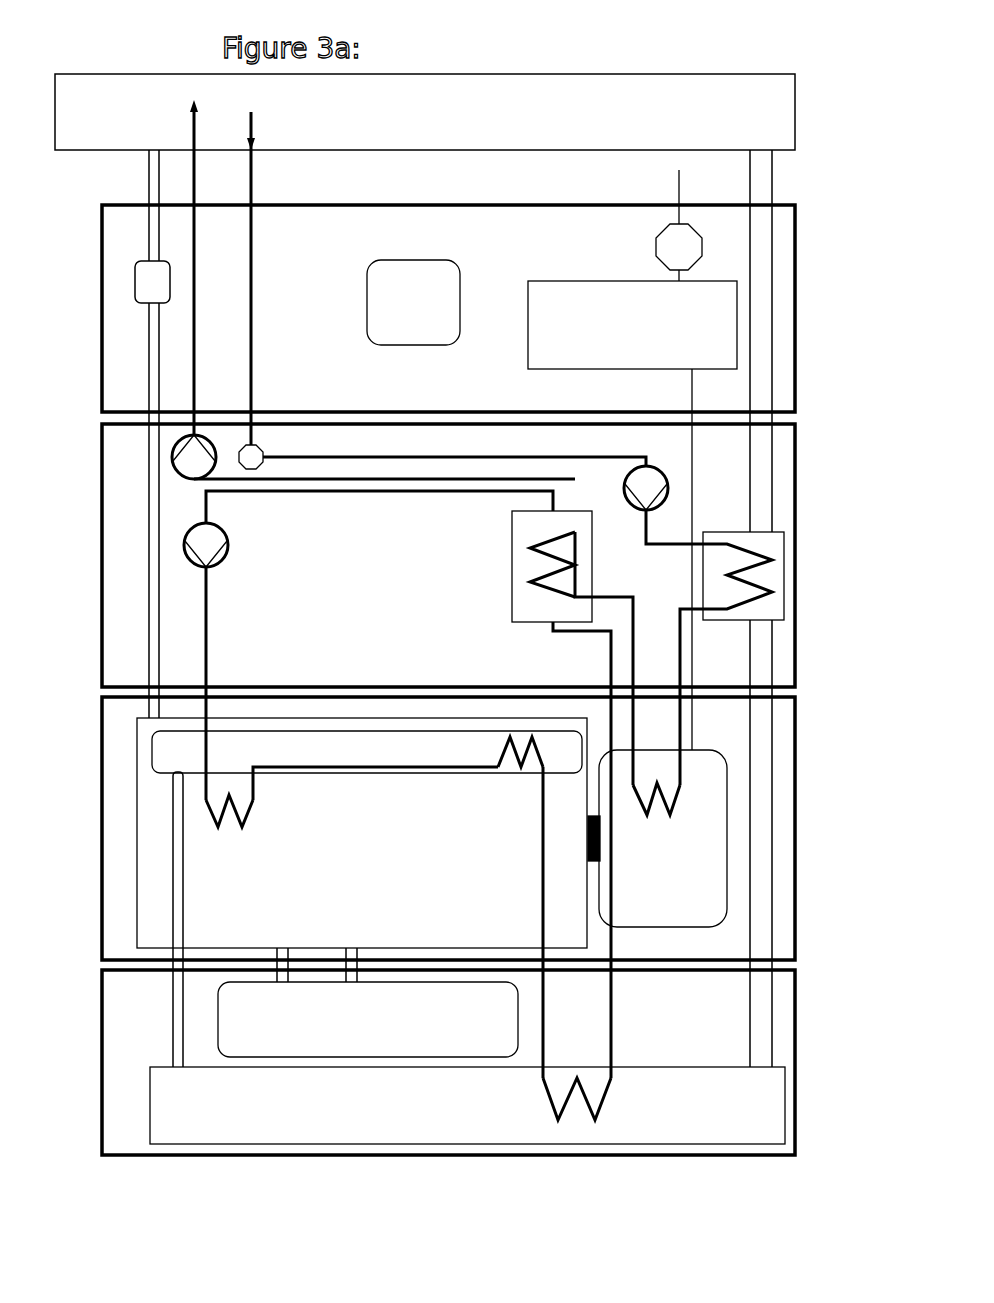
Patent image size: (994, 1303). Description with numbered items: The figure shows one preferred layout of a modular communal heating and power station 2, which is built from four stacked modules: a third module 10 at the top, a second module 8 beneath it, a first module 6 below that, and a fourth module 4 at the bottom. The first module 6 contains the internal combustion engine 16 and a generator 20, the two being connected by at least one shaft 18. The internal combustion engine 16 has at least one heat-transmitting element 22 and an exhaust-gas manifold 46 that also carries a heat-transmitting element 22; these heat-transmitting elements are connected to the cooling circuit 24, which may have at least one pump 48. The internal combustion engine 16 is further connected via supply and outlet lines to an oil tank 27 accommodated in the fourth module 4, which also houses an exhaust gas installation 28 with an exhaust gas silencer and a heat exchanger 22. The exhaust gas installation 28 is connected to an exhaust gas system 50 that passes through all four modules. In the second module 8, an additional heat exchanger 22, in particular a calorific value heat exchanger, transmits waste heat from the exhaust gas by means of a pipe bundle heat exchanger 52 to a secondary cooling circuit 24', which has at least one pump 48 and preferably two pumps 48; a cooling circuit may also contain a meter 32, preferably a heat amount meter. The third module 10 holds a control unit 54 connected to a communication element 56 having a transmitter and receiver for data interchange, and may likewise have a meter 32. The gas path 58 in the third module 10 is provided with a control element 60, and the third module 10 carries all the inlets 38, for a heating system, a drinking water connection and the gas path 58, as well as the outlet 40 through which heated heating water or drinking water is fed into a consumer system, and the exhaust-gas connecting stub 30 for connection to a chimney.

The modular communal heating and power station 2 is at (603, 140).
The fourth module 4 is at (803, 1072).
The first module 6 is at (803, 835).
The second module 8 is at (802, 543).
The third module 10 is at (803, 328).
The internal combustion engine 16 is at (362, 892).
The shaft 18 is at (591, 870).
The generator 20 is at (663, 838).
The heat-transmitting element 22 is at (525, 578).
The cooling circuit 24 is at (450, 784).
The secondary cooling circuit 24' is at (448, 621).
The oil tank 27 is at (368, 1019).
The exhaust gas installation 28 is at (467, 1105).
The exhaust-gas connecting stub 30 is at (762, 165).
The meter 32 is at (672, 258).
The inlet 38 is at (151, 145).
The outlet 40 is at (188, 141).
The exhaust-gas manifold 46 is at (367, 752).
The pump 48 is at (200, 465).
The exhaust gas system 50 is at (765, 740).
The pipe bundle heat exchanger 52 is at (767, 573).
The control unit 54 is at (632, 515).
The communication element 56 is at (413, 302).
The gas path 58 is at (155, 451).
The control element 60 is at (147, 279).